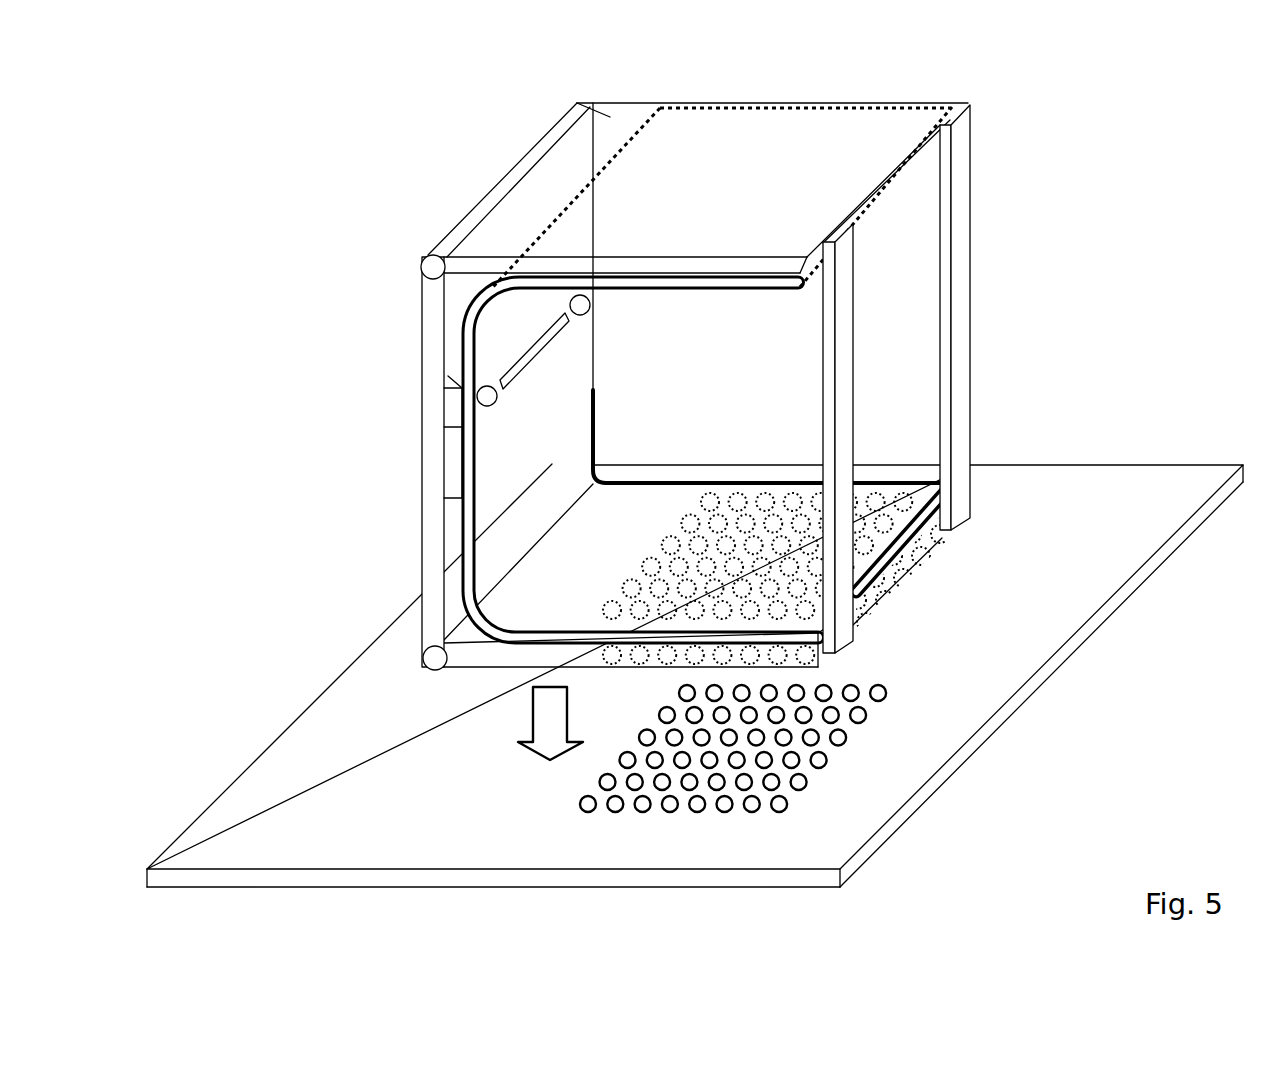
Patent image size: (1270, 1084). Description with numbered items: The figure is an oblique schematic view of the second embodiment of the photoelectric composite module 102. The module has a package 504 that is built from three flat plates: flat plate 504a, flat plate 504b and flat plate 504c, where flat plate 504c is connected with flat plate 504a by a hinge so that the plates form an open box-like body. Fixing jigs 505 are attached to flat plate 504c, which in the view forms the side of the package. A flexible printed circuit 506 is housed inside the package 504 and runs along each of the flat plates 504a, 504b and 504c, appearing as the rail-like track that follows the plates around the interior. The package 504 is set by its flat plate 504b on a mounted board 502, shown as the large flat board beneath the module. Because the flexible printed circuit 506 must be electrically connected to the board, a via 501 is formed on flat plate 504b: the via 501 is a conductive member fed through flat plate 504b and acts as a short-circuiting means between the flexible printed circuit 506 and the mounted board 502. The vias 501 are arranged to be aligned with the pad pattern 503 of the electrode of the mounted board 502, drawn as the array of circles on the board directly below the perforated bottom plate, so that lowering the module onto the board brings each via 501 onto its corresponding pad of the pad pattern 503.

The photoelectric composite module 102 is at (663, 406).
The via 501 is at (930, 553).
The mounted board 502 is at (940, 773).
The pad pattern 503 is at (887, 693).
The package 504 is at (428, 412).
The flat plate 504a is at (422, 338).
The flat plate 504b is at (478, 667).
The flat plate 504c is at (577, 103).
The fixing jigs 505 is at (845, 422).
The flexible printed circuit 506 is at (590, 392).